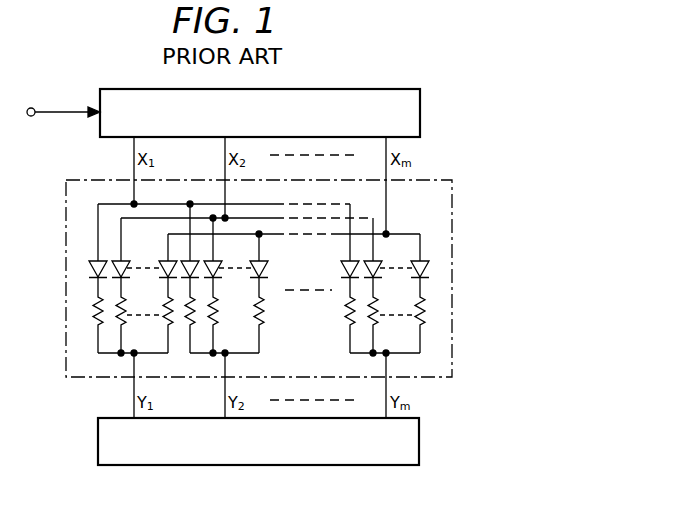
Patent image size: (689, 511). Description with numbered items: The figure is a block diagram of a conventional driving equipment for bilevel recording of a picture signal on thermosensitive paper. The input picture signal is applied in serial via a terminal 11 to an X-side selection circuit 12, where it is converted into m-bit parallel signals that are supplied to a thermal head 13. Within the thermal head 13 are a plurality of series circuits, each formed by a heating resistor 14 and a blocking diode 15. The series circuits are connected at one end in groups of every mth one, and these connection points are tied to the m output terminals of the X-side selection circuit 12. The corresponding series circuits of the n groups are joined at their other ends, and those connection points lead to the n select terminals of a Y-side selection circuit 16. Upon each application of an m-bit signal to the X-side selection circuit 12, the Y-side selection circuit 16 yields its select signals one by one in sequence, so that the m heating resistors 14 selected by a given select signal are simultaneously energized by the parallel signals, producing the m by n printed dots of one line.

The terminal 11 is at (36, 103).
The X-side selection circuit 12 is at (155, 88).
The thermal head 13 is at (330, 278).
The heating resistor 14 is at (426, 308).
The blocking diode 15 is at (440, 272).
The Y-side selection circuit 16 is at (420, 446).